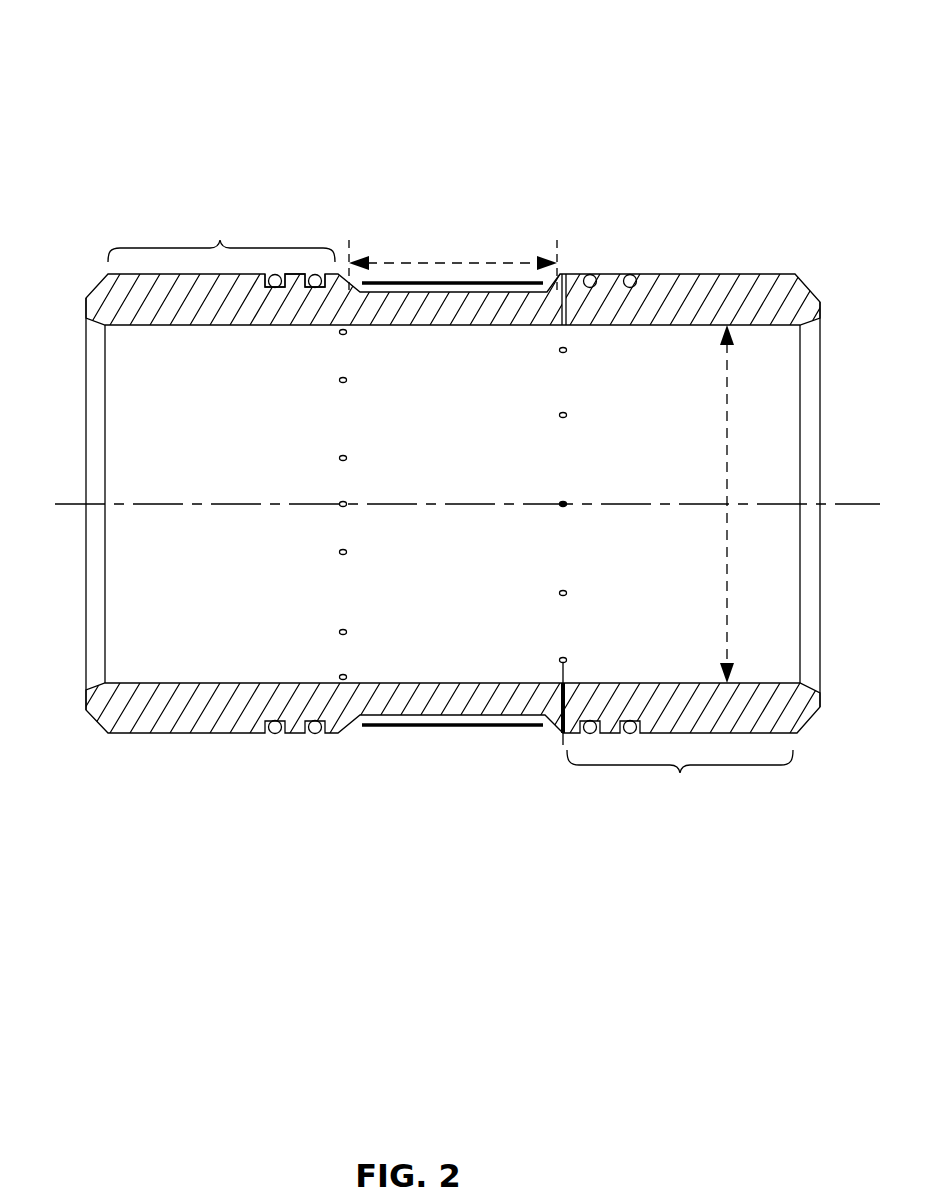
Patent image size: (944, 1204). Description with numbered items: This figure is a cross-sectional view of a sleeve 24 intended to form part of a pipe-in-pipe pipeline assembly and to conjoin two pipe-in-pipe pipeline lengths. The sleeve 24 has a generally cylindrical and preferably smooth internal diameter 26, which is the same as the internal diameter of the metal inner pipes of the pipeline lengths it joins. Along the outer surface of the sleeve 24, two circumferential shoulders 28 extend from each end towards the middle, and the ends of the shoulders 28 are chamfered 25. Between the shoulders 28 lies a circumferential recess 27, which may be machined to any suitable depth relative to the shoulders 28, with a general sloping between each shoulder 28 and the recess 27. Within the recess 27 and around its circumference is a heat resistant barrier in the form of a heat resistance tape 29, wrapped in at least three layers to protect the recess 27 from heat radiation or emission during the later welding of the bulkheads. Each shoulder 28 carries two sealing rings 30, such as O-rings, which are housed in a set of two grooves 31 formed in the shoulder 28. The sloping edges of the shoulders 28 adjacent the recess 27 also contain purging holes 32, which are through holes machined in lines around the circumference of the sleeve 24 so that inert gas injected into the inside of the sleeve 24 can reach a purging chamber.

The sleeve 24 is at (320, 62).
The chamfer 25 is at (815, 282).
The internal diameter 26 is at (727, 447).
The circumferential recess 27 is at (452, 262).
The circumferential shoulder 28 is at (220, 240).
The heat resistance tape 29 is at (425, 727).
The sealing ring 30 is at (630, 276).
The groove 31 is at (318, 286).
The purging hole 32 is at (340, 629).